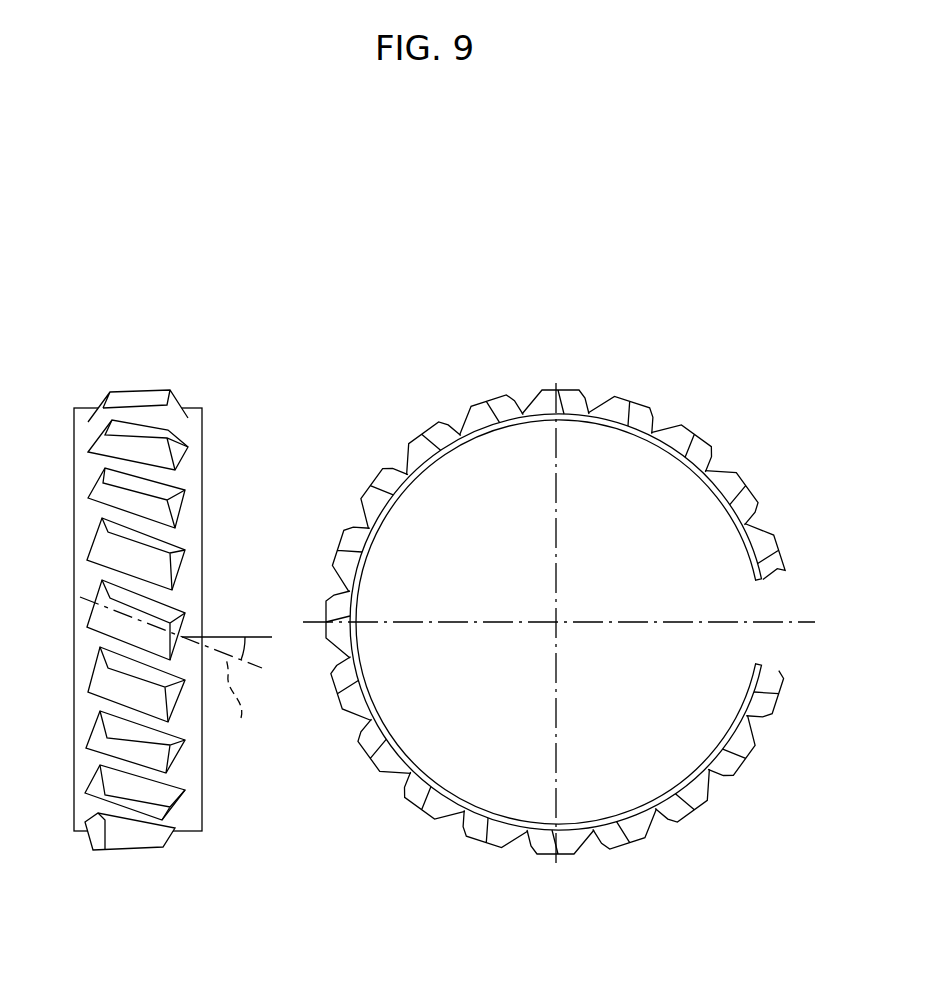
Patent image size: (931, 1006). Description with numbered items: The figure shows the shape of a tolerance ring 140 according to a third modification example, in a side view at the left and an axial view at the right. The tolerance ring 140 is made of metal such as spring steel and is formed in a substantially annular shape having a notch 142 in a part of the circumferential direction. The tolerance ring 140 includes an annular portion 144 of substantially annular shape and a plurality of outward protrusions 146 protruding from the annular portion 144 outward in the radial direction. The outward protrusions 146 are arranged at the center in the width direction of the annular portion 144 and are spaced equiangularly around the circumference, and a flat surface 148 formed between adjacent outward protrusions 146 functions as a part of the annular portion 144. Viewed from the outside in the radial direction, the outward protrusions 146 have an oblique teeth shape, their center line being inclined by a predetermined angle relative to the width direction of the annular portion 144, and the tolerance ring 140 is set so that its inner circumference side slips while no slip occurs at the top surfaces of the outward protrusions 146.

The tolerance ring 140 is at (336, 352).
The notch 142 is at (762, 582).
The annular portion 144 is at (670, 448).
The outward protrusions 146 is at (621, 406).
The flat surface 148 is at (138, 590).